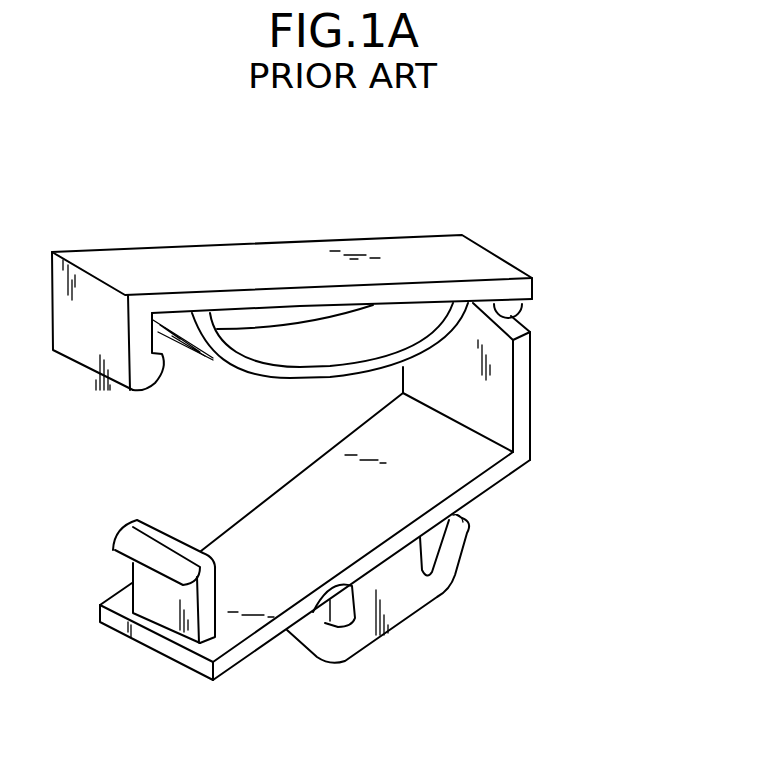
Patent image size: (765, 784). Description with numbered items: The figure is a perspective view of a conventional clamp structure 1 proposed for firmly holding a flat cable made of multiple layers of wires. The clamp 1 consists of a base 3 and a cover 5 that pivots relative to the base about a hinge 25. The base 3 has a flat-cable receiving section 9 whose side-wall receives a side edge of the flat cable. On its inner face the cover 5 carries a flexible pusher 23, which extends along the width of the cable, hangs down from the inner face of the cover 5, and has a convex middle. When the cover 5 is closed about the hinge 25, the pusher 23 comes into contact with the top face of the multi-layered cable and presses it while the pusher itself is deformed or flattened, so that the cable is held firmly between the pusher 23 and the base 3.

The clamp structure 1 is at (515, 230).
The base 3 is at (528, 481).
The cover 5 is at (289, 236).
The flat-cable receiving section 9 is at (500, 415).
The flexible pusher 23 is at (395, 320).
The hinge 25 is at (528, 310).